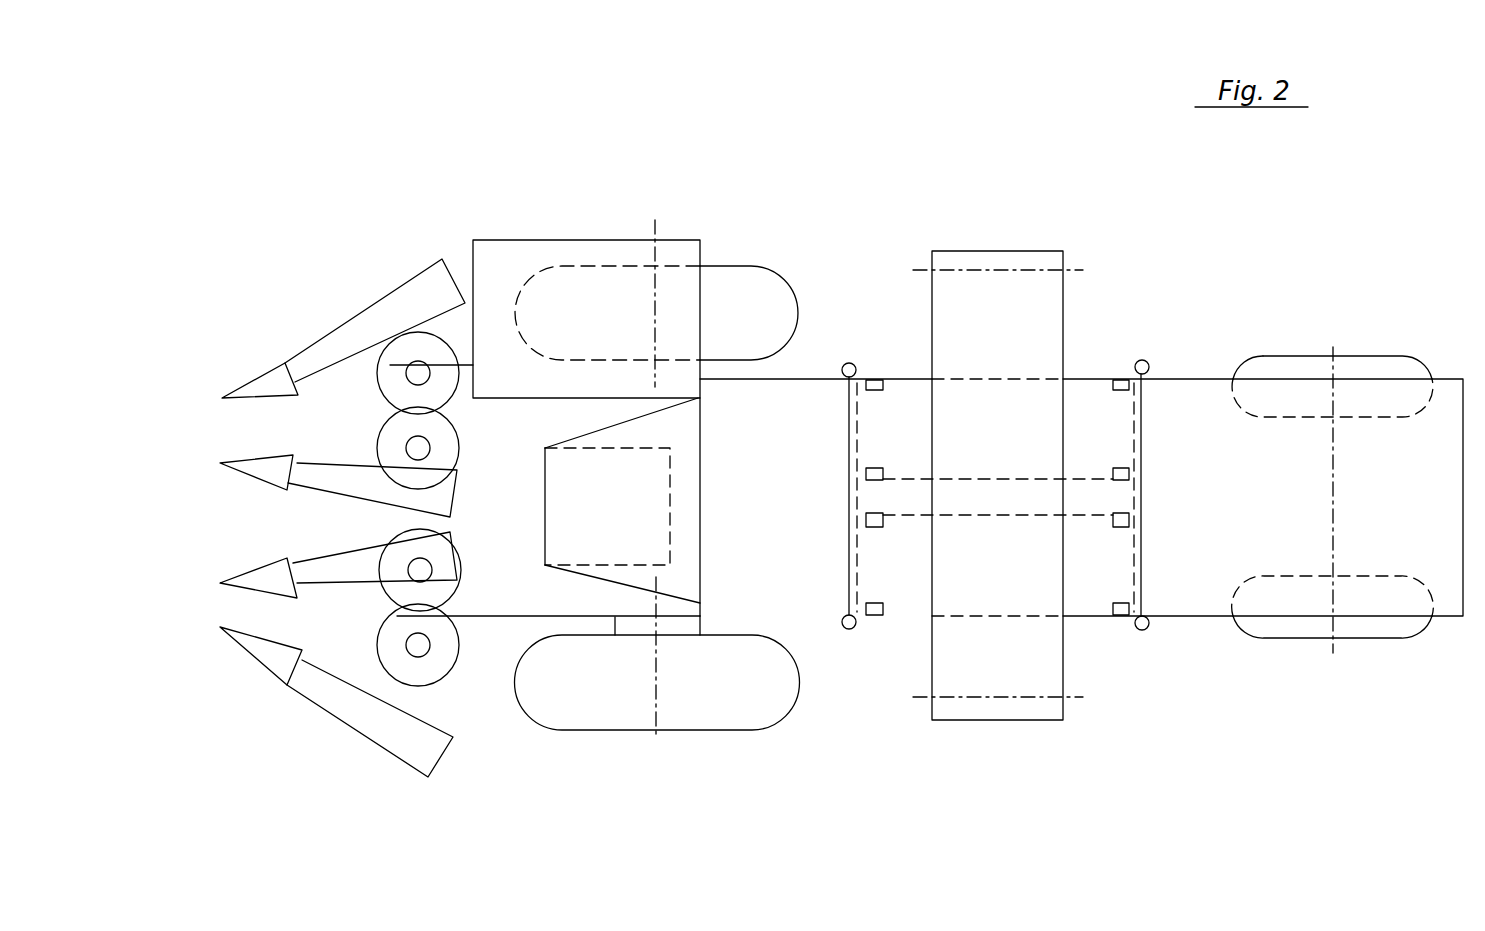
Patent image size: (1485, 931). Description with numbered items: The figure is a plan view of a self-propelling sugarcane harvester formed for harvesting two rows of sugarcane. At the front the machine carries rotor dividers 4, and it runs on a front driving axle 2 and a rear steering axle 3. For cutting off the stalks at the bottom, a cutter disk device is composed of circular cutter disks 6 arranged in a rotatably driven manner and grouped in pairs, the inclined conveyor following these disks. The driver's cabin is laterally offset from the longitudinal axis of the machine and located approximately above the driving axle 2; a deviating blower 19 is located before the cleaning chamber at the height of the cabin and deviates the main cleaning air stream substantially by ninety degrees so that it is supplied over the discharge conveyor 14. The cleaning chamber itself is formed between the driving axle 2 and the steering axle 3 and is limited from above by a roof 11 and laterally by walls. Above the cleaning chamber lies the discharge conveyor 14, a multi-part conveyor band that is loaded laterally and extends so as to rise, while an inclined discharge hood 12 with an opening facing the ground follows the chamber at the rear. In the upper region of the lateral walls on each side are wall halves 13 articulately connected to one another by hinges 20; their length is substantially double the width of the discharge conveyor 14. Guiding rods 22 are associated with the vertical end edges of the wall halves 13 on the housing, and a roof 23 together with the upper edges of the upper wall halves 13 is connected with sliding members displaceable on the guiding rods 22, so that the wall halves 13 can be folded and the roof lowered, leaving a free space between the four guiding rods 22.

The front driving axle 2 is at (657, 230).
The rear steering axle 3 is at (1333, 347).
The rotor dividers 4 is at (258, 465).
The cutter disks 6 is at (393, 435).
The roof 11 is at (792, 410).
The discharge hood 12 is at (1427, 438).
The wall halves 13 is at (1122, 432).
The discharge conveyor 14 is at (1068, 325).
The deviating blower 19 is at (577, 535).
The hinges 20 is at (872, 515).
The guiding rods 22 is at (850, 362).
The roof 23 is at (907, 442).